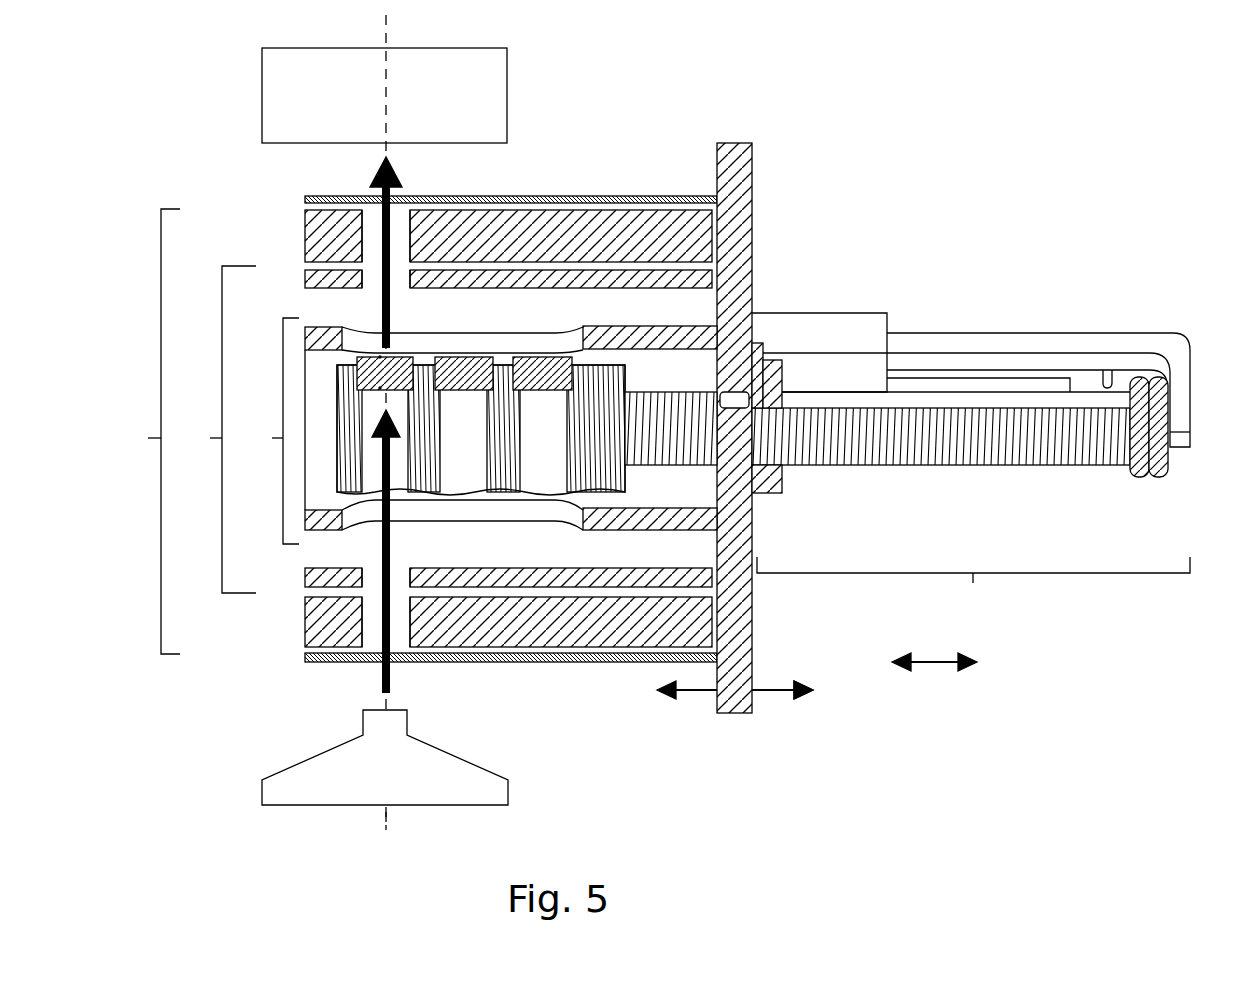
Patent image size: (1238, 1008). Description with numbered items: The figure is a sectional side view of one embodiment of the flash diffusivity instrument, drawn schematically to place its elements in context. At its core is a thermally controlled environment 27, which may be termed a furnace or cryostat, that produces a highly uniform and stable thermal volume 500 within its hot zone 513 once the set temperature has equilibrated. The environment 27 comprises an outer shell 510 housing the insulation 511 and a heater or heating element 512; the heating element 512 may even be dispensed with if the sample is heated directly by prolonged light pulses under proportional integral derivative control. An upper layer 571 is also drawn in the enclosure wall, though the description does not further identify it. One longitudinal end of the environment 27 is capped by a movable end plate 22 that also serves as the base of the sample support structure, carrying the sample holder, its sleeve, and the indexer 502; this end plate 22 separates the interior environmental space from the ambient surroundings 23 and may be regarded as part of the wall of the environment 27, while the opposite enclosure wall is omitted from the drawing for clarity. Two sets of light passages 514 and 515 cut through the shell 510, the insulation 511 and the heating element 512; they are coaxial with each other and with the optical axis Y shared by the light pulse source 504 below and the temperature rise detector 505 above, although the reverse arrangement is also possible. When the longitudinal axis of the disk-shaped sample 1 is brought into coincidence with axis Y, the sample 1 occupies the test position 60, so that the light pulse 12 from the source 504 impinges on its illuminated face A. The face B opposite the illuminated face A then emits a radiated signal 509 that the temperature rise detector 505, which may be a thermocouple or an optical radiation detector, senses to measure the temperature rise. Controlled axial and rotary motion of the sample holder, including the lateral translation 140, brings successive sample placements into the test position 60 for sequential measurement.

The test position 60 is at (398, 25).
The temperature rise detector 505 is at (485, 92).
The light pulse source 504 is at (462, 783).
The thermally controlled environment 27 is at (464, 455).
The surroundings 23 is at (818, 690).
The hot zone 513 is at (210, 429).
The thermal volume 500 is at (472, 431).
The upper magnetic yoke layer 571 is at (693, 237).
The insulation 511 is at (550, 635).
The heating element 512 is at (592, 280).
The outer shell 510 is at (305, 200).
The light passage set 515 is at (365, 197).
The light passage set 514 is at (398, 577).
The movable end plate 22 is at (737, 602).
The sample 1 is at (390, 372).
The indexer 502 is at (907, 465).
The lateral translation 140 is at (922, 662).
The radiated signal 509 is at (400, 180).
The light pulse 12 is at (380, 677).
The illuminated face A is at (380, 388).
The opposite face B is at (380, 357).
The optical axis Y is at (383, 838).